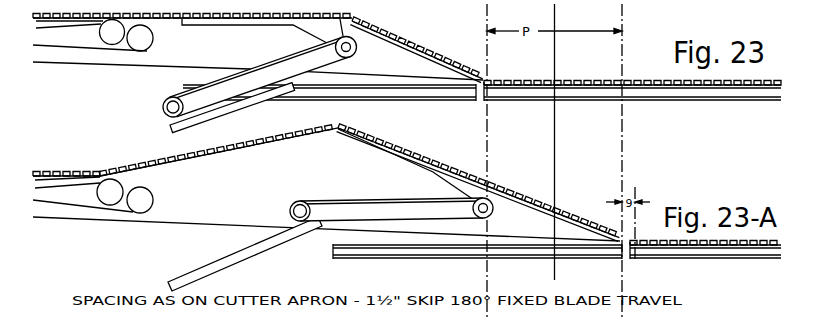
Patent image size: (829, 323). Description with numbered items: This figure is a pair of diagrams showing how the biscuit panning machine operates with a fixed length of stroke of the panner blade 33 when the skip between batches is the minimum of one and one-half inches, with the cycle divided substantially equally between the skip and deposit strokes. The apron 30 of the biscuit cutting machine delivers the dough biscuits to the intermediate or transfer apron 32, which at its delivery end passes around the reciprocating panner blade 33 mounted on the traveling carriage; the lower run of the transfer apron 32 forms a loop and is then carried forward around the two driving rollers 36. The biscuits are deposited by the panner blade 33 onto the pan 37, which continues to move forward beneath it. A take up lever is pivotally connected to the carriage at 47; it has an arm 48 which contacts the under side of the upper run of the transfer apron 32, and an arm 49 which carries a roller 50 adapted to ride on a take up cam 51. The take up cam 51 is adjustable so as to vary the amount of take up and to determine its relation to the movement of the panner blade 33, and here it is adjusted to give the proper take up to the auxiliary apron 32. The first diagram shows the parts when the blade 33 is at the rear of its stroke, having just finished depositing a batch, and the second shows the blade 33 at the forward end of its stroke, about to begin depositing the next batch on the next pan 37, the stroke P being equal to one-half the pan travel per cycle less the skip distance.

In FIG. 23, the apron 30 is at (38, 22).
In FIG. 23-A, the apron 30 is at (36, 184).
In FIG. 23, the transfer apron 32 is at (167, 65).
In FIG. 23-A, the transfer apron 32 is at (177, 220).
In FIG. 23, the panner blade 33 is at (421, 50).
In FIG. 23-A, the panner blade 33 is at (574, 217).
In FIG. 23, the driving rollers 36 is at (146, 32).
In FIG. 23, the pan 37 is at (443, 99).
In FIG. 23-A, the pan 37 is at (118, 190).
In FIG. 23, the pivot connection 47 is at (357, 48).
In FIG. 23-A, the pivot connection 47 is at (493, 208).
In FIG. 23, the arm 48 is at (266, 25).
In FIG. 23-A, the arm 48 is at (393, 154).
In FIG. 23, the arm 49 is at (247, 76).
In FIG. 23-A, the arm 49 is at (386, 200).
In FIG. 23, the roller 50 is at (166, 101).
In FIG. 23-A, the roller 50 is at (292, 205).
In FIG. 23, the take up cam 51 is at (197, 112).
In FIG. 23-A, the take up cam 51 is at (222, 258).